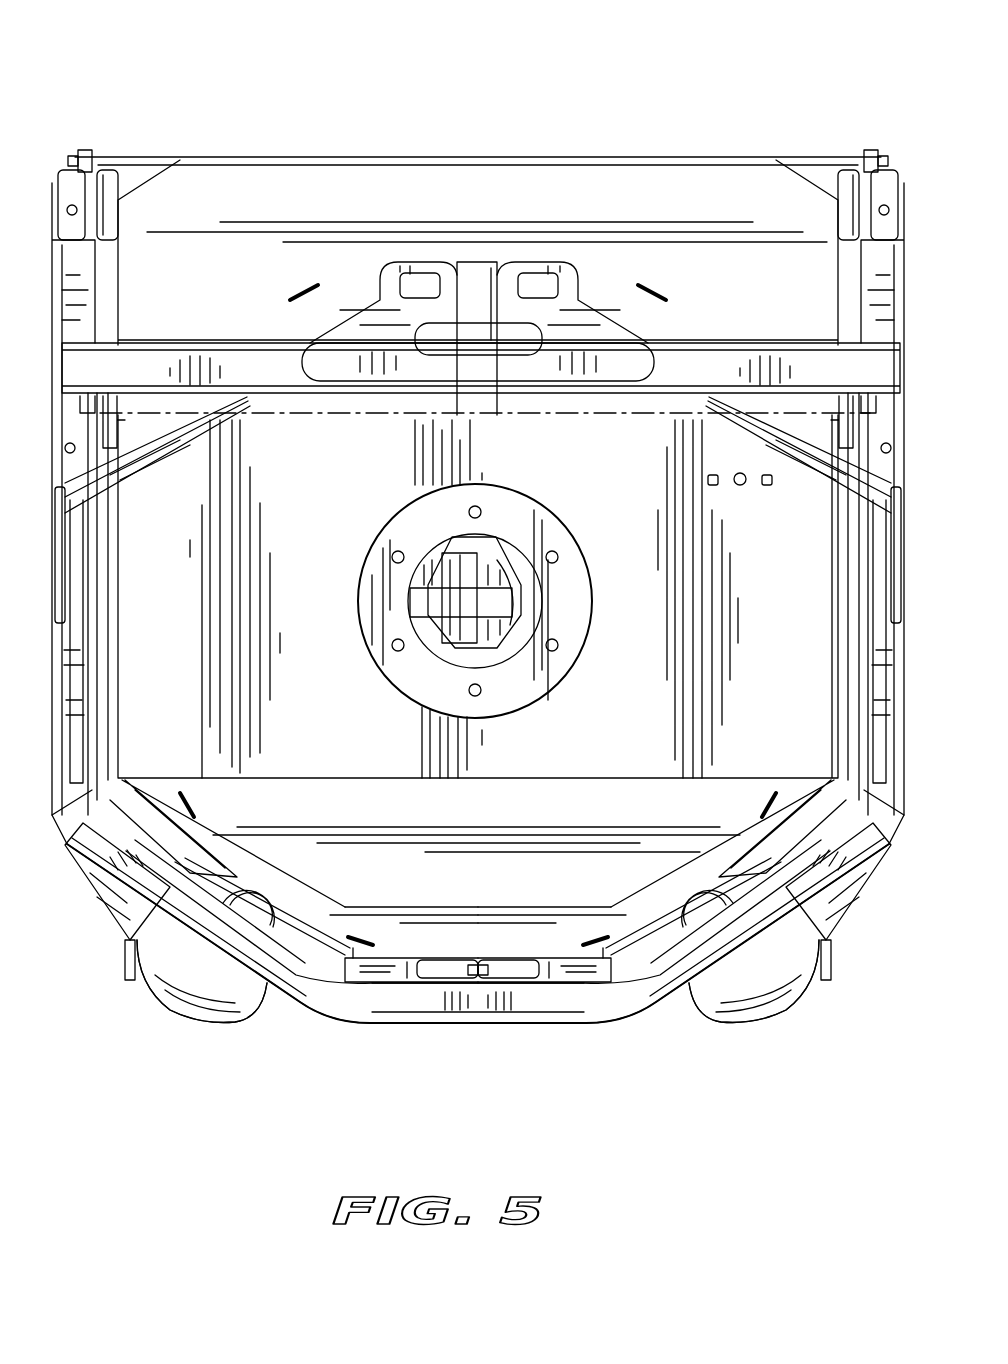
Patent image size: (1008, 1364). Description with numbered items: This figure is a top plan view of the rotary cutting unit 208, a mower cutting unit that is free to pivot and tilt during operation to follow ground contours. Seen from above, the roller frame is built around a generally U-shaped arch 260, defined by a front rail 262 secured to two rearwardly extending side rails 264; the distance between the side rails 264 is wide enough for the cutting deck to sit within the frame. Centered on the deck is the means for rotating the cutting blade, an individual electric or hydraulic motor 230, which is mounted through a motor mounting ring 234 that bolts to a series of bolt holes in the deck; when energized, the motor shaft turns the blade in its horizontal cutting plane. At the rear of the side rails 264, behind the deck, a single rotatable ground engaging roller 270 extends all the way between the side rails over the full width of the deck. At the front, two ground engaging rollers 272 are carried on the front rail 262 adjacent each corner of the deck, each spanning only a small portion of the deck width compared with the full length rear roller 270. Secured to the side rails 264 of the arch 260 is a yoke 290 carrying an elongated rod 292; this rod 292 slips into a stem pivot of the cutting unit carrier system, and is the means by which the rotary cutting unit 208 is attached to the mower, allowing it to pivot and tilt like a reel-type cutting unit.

The rotary cutting unit 208 is at (340, 75).
The motor 230 is at (420, 560).
The motor mounting ring 234 is at (533, 690).
The U-shaped arch 260 is at (621, 1010).
The front rail 262 is at (430, 1000).
The side rails 264 is at (77, 318).
The rear ground engaging roller 270 is at (830, 178).
The front ground engaging rollers 272 is at (195, 1008).
The yoke 290 is at (677, 375).
The rod 292 is at (482, 262).